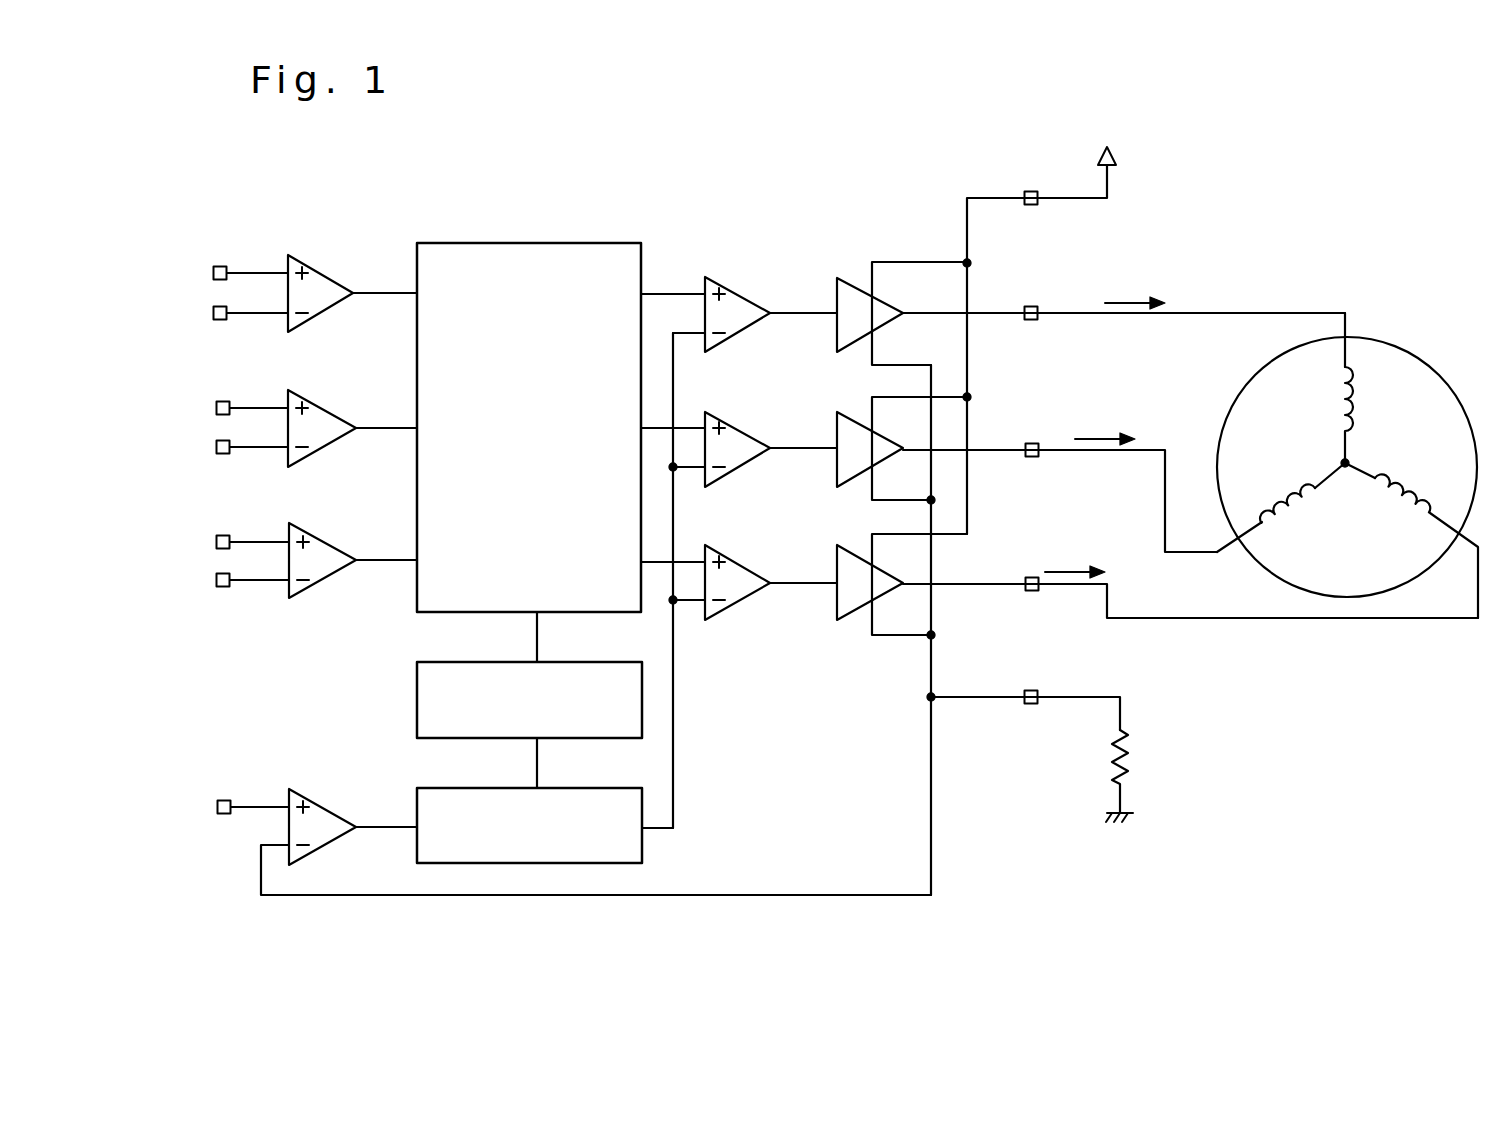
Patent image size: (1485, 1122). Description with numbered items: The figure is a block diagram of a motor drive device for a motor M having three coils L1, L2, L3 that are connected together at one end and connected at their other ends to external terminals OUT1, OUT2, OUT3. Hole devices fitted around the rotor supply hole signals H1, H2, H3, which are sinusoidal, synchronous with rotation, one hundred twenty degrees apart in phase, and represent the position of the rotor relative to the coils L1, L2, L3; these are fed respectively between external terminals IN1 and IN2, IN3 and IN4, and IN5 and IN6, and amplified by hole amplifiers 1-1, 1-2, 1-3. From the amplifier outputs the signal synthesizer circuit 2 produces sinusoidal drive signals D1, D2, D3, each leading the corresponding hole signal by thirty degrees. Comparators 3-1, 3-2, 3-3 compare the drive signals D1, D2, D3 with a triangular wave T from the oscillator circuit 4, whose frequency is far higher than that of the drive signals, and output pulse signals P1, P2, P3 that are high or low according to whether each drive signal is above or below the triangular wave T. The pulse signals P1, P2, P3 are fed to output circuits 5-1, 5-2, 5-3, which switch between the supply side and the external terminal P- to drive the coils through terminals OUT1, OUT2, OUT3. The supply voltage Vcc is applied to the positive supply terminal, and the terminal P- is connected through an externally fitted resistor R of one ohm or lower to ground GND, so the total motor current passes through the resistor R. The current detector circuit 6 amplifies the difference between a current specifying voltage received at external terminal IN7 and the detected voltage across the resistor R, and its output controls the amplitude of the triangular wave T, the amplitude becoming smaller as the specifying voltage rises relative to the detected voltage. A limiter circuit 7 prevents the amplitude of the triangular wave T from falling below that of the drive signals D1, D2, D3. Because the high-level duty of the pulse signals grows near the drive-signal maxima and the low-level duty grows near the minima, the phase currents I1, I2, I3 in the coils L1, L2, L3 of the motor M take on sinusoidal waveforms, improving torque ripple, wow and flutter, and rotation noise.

The hole amplifier 1-1 is at (324, 278).
The hole amplifier 1-2 is at (326, 413).
The hole amplifier 1-3 is at (326, 543).
The signal synthesizer circuit 2 is at (472, 244).
The comparator 3-1 is at (740, 290).
The comparator 3-2 is at (740, 427).
The comparator 3-3 is at (740, 567).
The oscillator circuit 4 is at (418, 795).
The output circuit 5-1 is at (838, 274).
The output circuit 5-2 is at (836, 414).
The output circuit 5-3 is at (836, 549).
The current detector circuit 6 is at (338, 814).
The limiter circuit 7 is at (418, 682).
The external terminal IN1 is at (215, 266).
The external terminal IN2 is at (222, 320).
The external terminal IN3 is at (218, 402).
The external terminal IN4 is at (225, 454).
The external terminal IN5 is at (221, 535).
The external terminal IN6 is at (224, 587).
The external terminal IN7 is at (226, 798).
The hole signal H1 is at (183, 296).
The hole signal H2 is at (183, 429).
The hole signal H3 is at (183, 559).
The drive signal D1 is at (656, 278).
The drive signal D2 is at (660, 420).
The drive signal D3 is at (662, 552).
The triangular wave T is at (679, 733).
The pulse signal P1 is at (796, 308).
The pulse signal P2 is at (794, 440).
The pulse signal P3 is at (794, 578).
The external terminal OUT1 is at (1028, 304).
The external terminal OUT2 is at (1028, 439).
The external terminal OUT3 is at (1025, 572).
The external terminal P- is at (1028, 690).
The supply voltage Vcc is at (1107, 140).
The resistor R is at (1136, 757).
The ground GND is at (1159, 816).
The phase current I1 is at (1135, 287).
The phase current I2 is at (1105, 423).
The phase current I3 is at (1075, 557).
The motor M is at (1412, 366).
The coil L1 is at (1362, 407).
The coil L2 is at (1280, 490).
The coil L3 is at (1422, 482).